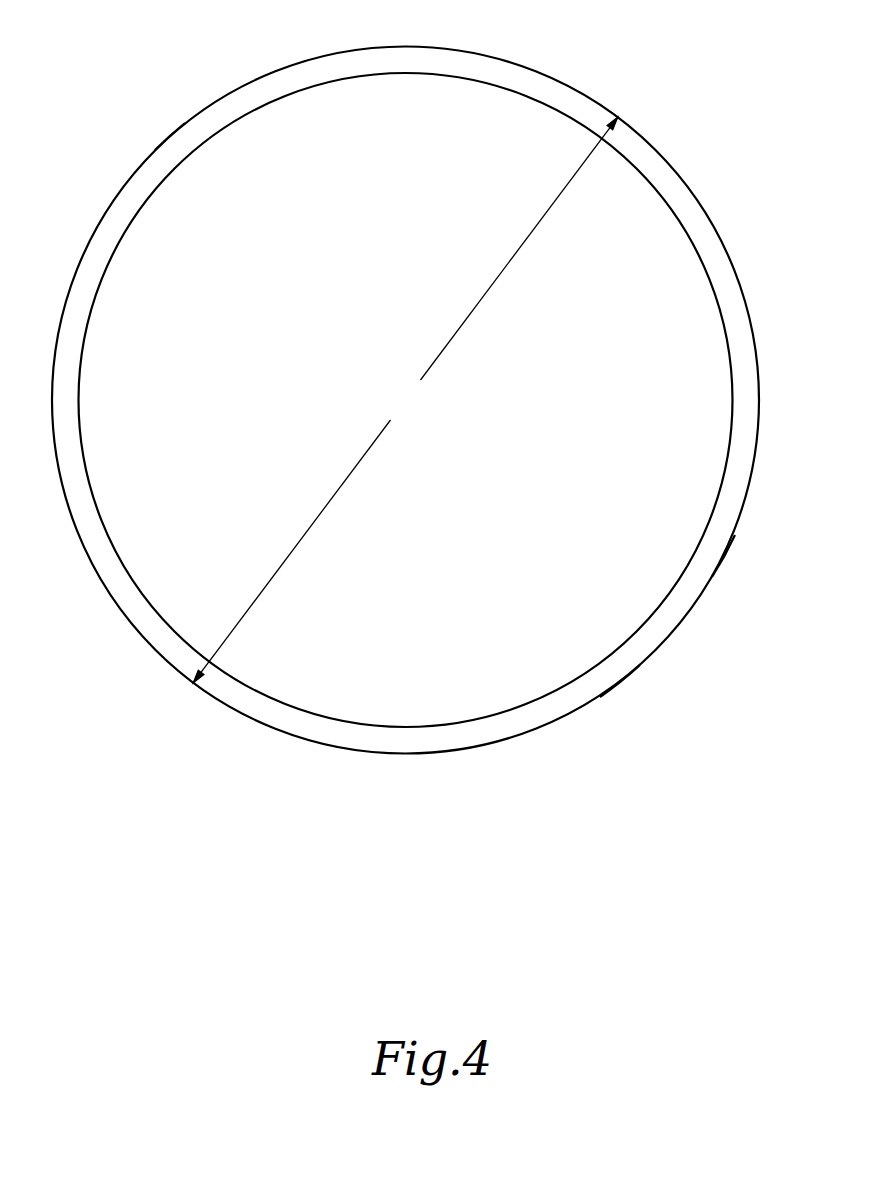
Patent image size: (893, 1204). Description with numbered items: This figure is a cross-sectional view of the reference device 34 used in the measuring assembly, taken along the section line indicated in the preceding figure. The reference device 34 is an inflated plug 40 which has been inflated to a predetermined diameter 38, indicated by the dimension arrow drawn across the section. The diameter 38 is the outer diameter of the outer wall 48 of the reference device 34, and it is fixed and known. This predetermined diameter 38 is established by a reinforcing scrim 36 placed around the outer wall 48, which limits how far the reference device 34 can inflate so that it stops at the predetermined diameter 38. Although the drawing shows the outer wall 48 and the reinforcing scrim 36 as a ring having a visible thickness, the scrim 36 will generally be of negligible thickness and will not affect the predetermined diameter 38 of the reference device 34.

The reference device 34 is at (539, 70).
The reinforcing scrim 36 is at (725, 555).
The predetermined diameter 38 is at (424, 400).
The inflated plug 40 is at (168, 138).
The outer wall 48 is at (620, 682).